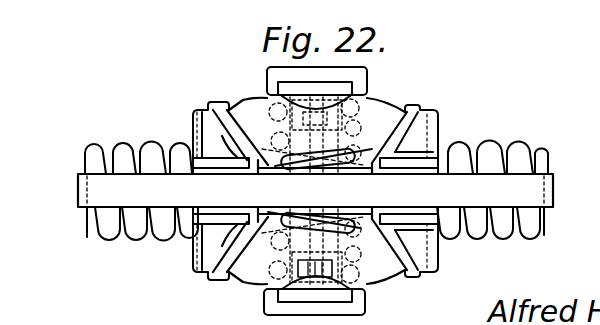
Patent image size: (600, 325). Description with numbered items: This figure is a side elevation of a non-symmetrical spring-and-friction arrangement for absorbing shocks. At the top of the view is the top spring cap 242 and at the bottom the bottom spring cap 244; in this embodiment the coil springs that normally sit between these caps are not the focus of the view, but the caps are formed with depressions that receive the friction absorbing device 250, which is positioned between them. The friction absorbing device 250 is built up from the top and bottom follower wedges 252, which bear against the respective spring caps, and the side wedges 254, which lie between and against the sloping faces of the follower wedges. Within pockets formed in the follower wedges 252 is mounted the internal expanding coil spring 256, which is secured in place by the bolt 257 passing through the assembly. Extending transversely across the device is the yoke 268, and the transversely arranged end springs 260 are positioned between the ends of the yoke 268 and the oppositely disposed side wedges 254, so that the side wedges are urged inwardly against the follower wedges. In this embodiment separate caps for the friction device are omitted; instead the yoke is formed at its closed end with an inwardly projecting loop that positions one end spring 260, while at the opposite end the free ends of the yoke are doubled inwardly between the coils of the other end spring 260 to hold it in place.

The top spring cap 242 is at (268, 78).
The bottom spring cap 244 is at (265, 303).
The friction absorbing device 250 is at (423, 125).
The top and bottom follower wedges 252 is at (371, 115).
The side wedges 254 is at (191, 118).
The internal expanding coil spring 256 is at (270, 108).
The bolt 257 is at (265, 277).
The end springs 260 is at (85, 152).
The yoke 268 is at (554, 189).